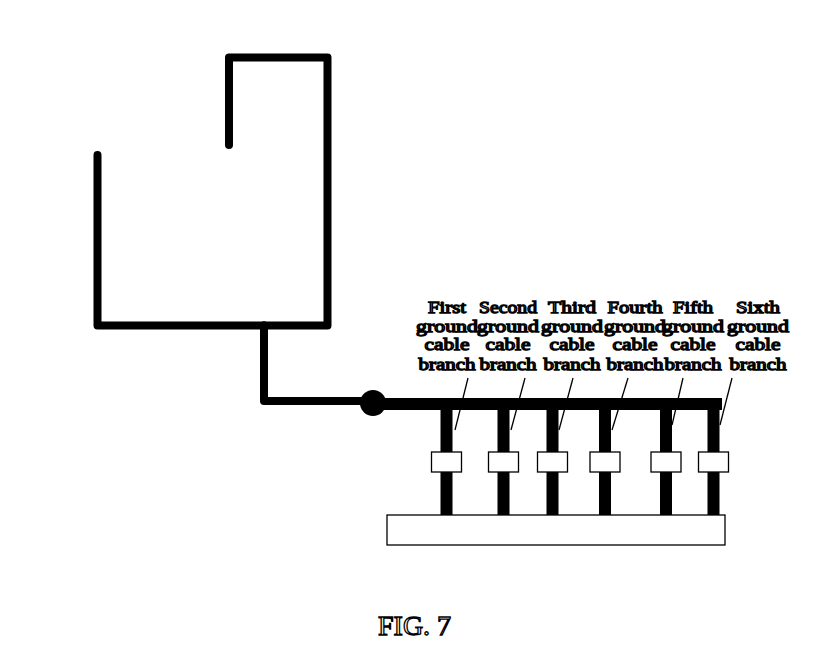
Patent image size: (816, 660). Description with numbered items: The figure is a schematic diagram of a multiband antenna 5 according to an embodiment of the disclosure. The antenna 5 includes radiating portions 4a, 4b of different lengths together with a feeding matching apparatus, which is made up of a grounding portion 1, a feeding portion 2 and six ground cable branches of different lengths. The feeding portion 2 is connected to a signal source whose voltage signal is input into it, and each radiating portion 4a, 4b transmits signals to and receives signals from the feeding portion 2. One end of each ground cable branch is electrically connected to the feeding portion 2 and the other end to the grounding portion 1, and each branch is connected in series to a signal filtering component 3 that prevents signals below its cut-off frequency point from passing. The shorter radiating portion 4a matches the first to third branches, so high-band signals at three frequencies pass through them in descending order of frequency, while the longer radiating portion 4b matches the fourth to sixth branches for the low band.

The grounding portion 1 is at (580, 530).
The feeding portion 2 is at (380, 392).
The signal filtering component 3 is at (454, 467).
The radiating portion 4a is at (92, 248).
The radiating portion 4b is at (332, 202).
The antenna 5 is at (404, 233).